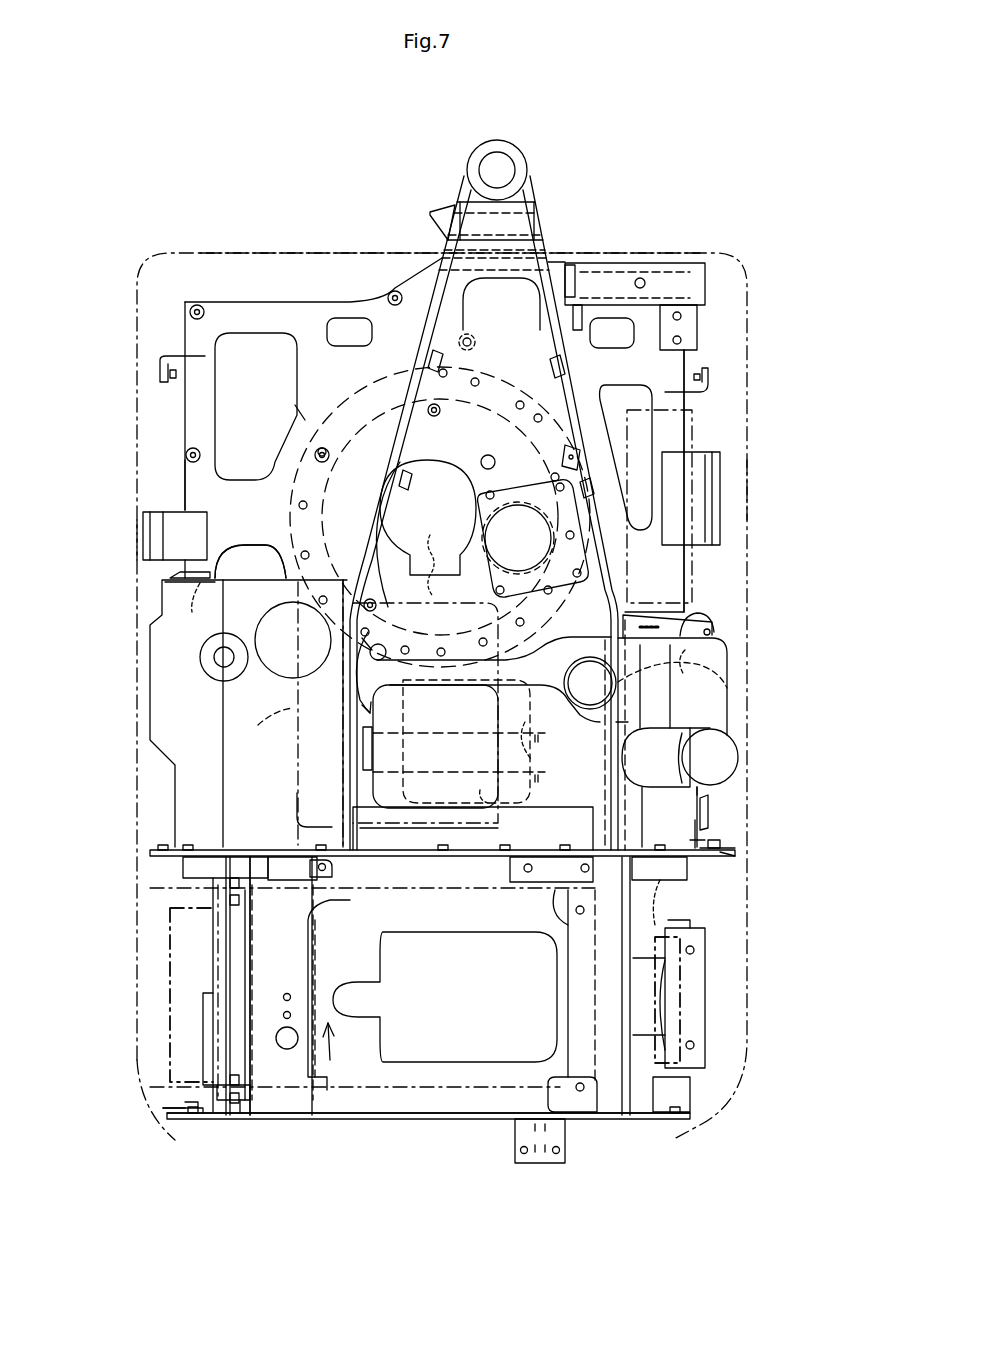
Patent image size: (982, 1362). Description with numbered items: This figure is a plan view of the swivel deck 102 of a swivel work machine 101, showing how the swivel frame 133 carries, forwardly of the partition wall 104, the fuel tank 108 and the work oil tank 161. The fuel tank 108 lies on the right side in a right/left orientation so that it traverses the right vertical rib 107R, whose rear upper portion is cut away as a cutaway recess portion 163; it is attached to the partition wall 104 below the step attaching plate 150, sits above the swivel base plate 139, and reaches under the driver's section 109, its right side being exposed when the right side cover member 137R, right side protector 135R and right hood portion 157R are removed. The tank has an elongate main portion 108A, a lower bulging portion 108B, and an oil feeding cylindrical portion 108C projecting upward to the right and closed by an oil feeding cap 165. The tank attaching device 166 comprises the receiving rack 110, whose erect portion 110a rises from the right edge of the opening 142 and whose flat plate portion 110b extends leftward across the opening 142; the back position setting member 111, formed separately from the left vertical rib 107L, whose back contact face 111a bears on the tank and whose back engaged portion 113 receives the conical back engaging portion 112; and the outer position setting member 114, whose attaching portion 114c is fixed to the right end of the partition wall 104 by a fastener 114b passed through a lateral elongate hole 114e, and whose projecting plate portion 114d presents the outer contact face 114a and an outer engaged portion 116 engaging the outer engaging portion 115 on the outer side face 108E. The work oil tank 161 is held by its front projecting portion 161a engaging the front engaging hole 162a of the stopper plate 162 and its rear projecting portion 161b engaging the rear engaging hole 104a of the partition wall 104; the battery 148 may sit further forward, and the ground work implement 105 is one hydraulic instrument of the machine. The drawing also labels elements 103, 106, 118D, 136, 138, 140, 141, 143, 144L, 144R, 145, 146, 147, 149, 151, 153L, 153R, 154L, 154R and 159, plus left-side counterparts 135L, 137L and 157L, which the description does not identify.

The swivel work machine 101 is at (683, 213).
The swivel deck 102 is at (120, 250).
The lower bracket 103 is at (480, 1124).
The partition wall 104 is at (155, 853).
The rear engaging hole 104a is at (228, 847).
The ground work implement 105 is at (540, 148).
The mast top portion 106 is at (528, 193).
The left vertical rib 107L is at (401, 348).
The right vertical rib 107R is at (590, 400).
The fuel tank 108 is at (724, 648).
The main portion 108A is at (545, 637).
The lower bulging portion 108B is at (748, 660).
The oil feeding cylindrical portion 108C is at (652, 742).
The outer side face 108E is at (700, 795).
The driver's section 109 is at (264, 730).
The receiving rack 110 is at (480, 730).
The erect portion 110a is at (550, 763).
The flat plate portion 110b is at (451, 789).
The back position setting member 111 is at (372, 640).
The back contact face 111a is at (389, 678).
The back engaging portion 112 is at (352, 710).
The back engaged portion 113 is at (362, 753).
The outer position setting member 114 is at (740, 850).
The outer contact face 114a is at (695, 830).
The fastener 114b is at (720, 840).
The attaching portion 114c is at (748, 868).
The projecting plate portion 114d is at (710, 848).
The lateral elongate hole 114e is at (695, 899).
The outer engaging portion 115 is at (712, 814).
The outer engaged portion 116 is at (695, 808).
The frame portion 118D is at (315, 802).
The swivel frame 133 is at (165, 410).
The left leg 135L is at (150, 913).
The right side protector 135R is at (748, 978).
The cross member 136 is at (330, 1060).
The left boundary 137L is at (140, 540).
The right side cover member 137R is at (748, 488).
The top boundary 138 is at (312, 250).
The swivel base plate 139 is at (192, 465).
The plate edge 140 is at (192, 492).
The bracket 141 is at (183, 878).
The opening 142 is at (522, 660).
The bottom bar 143 is at (412, 1124).
The left vertical member 144L is at (300, 988).
The right vertical member 144R is at (632, 940).
The vertical member 145 is at (237, 1124).
The vertical member 146 is at (298, 1124).
The lower bracket 147 is at (205, 1124).
The battery 148 is at (165, 1078).
The opening 149 is at (545, 1028).
The step attaching plate 150 is at (566, 815).
The flywheel 151 is at (436, 414).
The left box 153L is at (160, 518).
The right box 153R is at (700, 465).
The left bracket 154L is at (160, 360).
The right bracket 154R is at (710, 392).
The left leg 157L is at (175, 1020).
The right hood portion 157R is at (770, 1045).
The bracket 159 is at (700, 588).
The work oil tank 161 is at (165, 680).
The front projecting portion 161a is at (200, 572).
The rear projecting portion 161b is at (250, 876).
The stopper plate 162 is at (172, 578).
The front engaging hole 162a is at (193, 611).
The cutaway recess portion 163 is at (699, 660).
The oil feeding cap 165 is at (722, 757).
The tank attaching device 166 is at (752, 722).